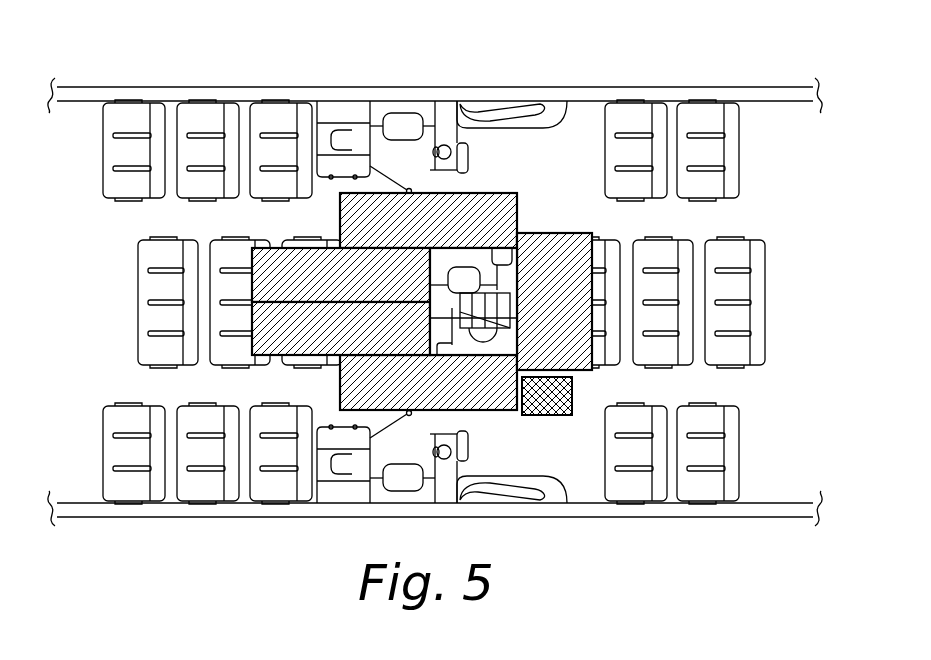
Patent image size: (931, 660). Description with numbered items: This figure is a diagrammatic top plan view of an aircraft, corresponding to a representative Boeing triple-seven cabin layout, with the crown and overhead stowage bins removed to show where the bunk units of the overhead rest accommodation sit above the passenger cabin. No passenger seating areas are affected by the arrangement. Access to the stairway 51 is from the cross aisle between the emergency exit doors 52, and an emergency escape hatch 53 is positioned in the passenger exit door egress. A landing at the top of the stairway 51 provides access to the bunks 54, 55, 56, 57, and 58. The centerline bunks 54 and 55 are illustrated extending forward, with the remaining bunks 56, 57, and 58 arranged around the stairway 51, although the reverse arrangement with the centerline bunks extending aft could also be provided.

The stairway 51 is at (538, 243).
The emergency exit doors 52 is at (548, 112).
The emergency escape hatch 53 is at (549, 420).
The bunk 54 is at (283, 358).
The bunk 55 is at (281, 255).
The bunk 56 is at (492, 402).
The bunk 57 is at (484, 205).
The bunk 58 is at (553, 243).